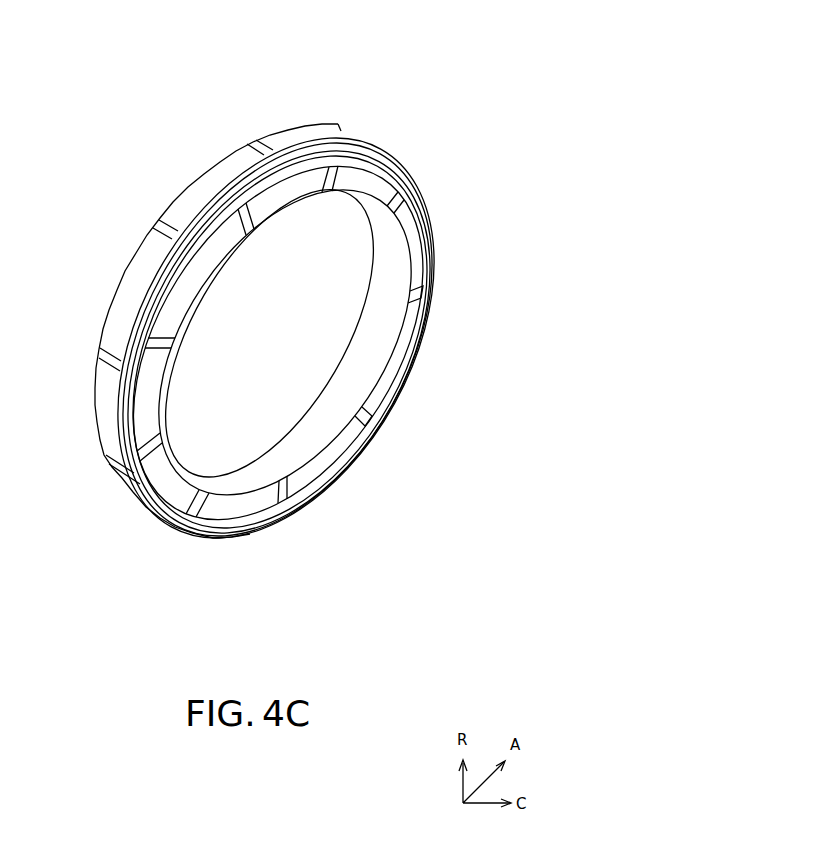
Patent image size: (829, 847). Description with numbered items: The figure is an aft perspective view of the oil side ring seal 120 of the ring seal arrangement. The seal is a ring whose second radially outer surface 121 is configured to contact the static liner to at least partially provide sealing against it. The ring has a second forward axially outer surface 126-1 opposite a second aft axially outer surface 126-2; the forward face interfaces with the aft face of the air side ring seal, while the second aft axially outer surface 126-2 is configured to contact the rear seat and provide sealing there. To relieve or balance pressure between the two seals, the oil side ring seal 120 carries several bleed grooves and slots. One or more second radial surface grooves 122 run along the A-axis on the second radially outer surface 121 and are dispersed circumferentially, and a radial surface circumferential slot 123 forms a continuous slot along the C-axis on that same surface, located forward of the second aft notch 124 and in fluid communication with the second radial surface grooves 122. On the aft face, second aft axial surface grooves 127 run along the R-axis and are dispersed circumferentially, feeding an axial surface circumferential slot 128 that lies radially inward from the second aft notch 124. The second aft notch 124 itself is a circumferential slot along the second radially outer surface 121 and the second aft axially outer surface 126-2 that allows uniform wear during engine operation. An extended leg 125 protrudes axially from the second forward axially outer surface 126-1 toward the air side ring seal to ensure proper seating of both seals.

The oil side ring seal 120 is at (441, 68).
The second radially outer surface 121 is at (205, 192).
The second radial surface groove 122 is at (160, 227).
The radial surface circumferential slot 123 is at (280, 153).
The second aft notch 124 is at (260, 205).
The extended leg 125 is at (115, 309).
The second forward axially outer surface 126-1 is at (107, 342).
The second aft axially outer surface 126-2 is at (397, 341).
The second aft axial surface groove 127 is at (367, 413).
The axial surface circumferential slot 128 is at (397, 178).